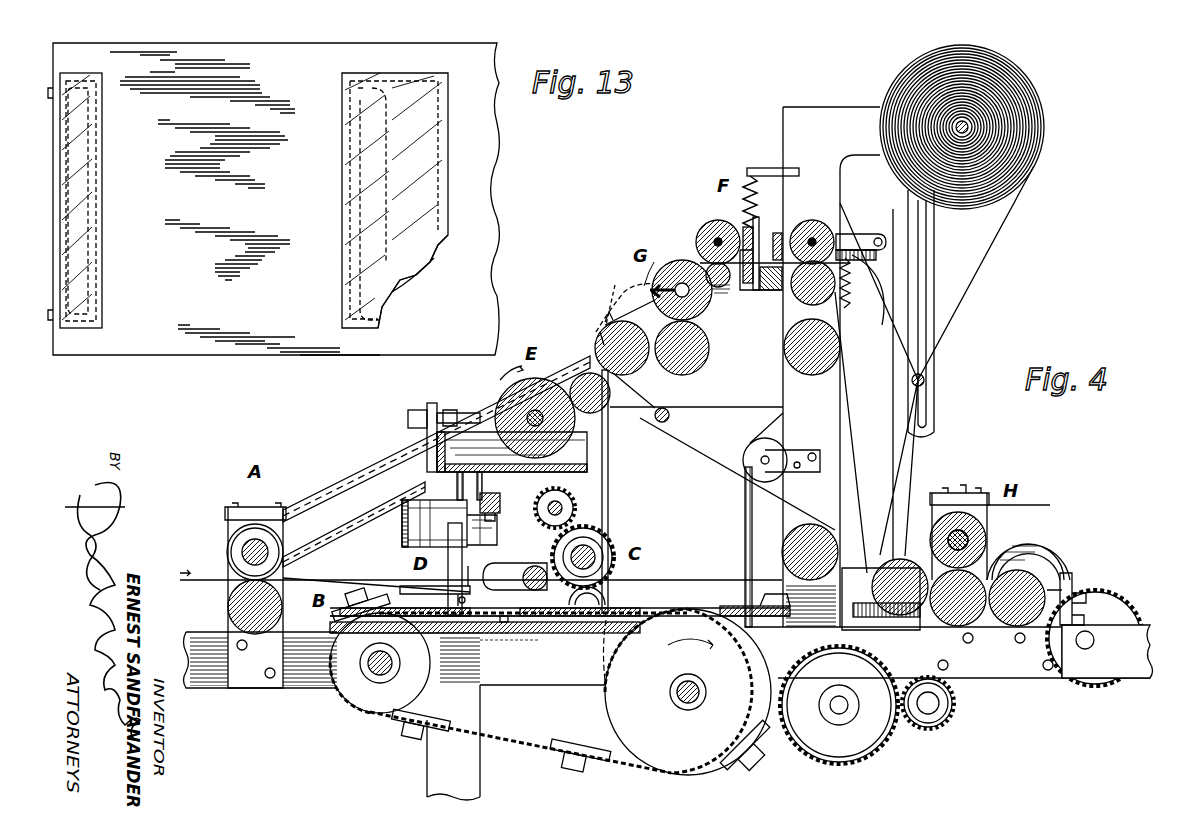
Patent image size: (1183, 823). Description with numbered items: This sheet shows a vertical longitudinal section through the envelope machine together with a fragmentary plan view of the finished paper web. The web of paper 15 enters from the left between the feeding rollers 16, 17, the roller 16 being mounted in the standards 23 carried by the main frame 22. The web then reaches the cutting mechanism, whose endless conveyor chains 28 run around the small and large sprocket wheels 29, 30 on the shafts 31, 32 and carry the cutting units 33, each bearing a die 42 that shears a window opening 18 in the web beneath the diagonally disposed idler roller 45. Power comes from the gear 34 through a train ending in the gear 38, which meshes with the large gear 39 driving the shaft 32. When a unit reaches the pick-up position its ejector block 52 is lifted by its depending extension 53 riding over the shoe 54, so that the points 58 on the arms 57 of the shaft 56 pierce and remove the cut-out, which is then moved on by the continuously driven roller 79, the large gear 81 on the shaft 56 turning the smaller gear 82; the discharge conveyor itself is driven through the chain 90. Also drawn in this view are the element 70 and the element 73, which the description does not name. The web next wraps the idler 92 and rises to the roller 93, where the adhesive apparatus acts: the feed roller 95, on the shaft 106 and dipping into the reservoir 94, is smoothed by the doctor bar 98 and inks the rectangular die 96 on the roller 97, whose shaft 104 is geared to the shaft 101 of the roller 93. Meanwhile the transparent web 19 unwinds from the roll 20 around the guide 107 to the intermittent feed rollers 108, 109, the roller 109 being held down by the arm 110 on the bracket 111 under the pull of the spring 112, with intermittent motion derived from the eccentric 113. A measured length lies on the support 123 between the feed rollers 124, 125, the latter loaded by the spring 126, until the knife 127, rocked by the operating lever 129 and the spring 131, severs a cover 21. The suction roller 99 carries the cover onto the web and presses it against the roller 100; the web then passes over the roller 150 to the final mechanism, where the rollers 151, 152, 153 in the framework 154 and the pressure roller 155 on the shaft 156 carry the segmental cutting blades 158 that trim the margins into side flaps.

In FIG. 13, the web of paper 15 is at (273, 199).
In FIG. 4, the web of paper 15 is at (473, 586).
In FIG. 4, the feeding roller 16 is at (228, 620).
In FIG. 4, the feeding roller 17 is at (230, 557).
In FIG. 13, the window opening 18 is at (392, 305).
In FIG. 4, the web of transparent paper 19 is at (983, 275).
In FIG. 4, the roll 20 is at (1044, 80).
In FIG. 13, the cover 21 is at (410, 290).
In FIG. 4, the main frame 22 is at (308, 686).
In FIG. 4, the standards 23 is at (310, 570).
In FIG. 4, the endless conveyor chains 28 is at (515, 760).
In FIG. 4, the small sprocket wheel 29 is at (350, 715).
In FIG. 4, the large sprocket wheel 30 is at (686, 760).
In FIG. 4, the shaft 31 is at (385, 675).
In FIG. 4, the shaft 32 is at (673, 690).
In FIG. 4, the cutting units 33 is at (360, 598).
In FIG. 4, the gear 34 is at (1100, 598).
In FIG. 4, the gear 38 is at (952, 718).
In FIG. 4, the large gear 39 is at (870, 745).
In FIG. 4, the die 42 is at (490, 636).
In FIG. 4, the idler roller 45 is at (440, 598).
In FIG. 4, the ejector block 52 is at (504, 625).
In FIG. 4, the depending extension 53 is at (540, 618).
In FIG. 4, the shoe 54 is at (575, 633).
In FIG. 4, the shaft 56 is at (590, 550).
In FIG. 4, the arms 57 is at (565, 572).
In FIG. 4, the point 58 is at (605, 600).
In FIG. 4, the lever 70 is at (756, 440).
In FIG. 4, the brace 73 is at (380, 455).
In FIG. 4, the continuously driven roller 79 is at (500, 500).
In FIG. 4, the large gear 81 is at (596, 552).
In FIG. 4, the smaller gear 82 is at (575, 505).
In FIG. 4, the chain 90 is at (398, 530).
In FIG. 4, the idler 92 is at (782, 542).
In FIG. 4, the roller 93 is at (650, 362).
In FIG. 4, the reservoir 94 is at (432, 403).
In FIG. 4, the feed roller 95 is at (512, 368).
In FIG. 4, the die 96 is at (575, 373).
In FIG. 4, the roller 97 is at (608, 440).
In FIG. 4, the doctor bar 98 is at (500, 400).
In FIG. 4, the roller 99 is at (700, 322).
In FIG. 4, the roller 100 is at (709, 355).
In FIG. 4, the shaft 101 is at (625, 298).
In FIG. 4, the shaft 104 is at (655, 420).
In FIG. 4, the shaft 106 is at (590, 466).
In FIG. 4, the guide 107 is at (925, 383).
In FIG. 4, the feed roller 108 is at (838, 312).
In FIG. 4, the feed roller 109 is at (810, 220).
In FIG. 4, the arm 110 is at (848, 237).
In FIG. 4, the bracket 111 is at (870, 245).
In FIG. 4, the spring 112 is at (852, 292).
In FIG. 4, the eccentric 113 is at (1050, 598).
In FIG. 4, the support 123 is at (768, 292).
In FIG. 4, the feed roller 124 is at (722, 288).
In FIG. 4, the feed roller 125 is at (704, 223).
In FIG. 4, the spring 126 is at (660, 260).
In FIG. 4, the knife 127 is at (768, 202).
In FIG. 4, the operating lever 129 is at (742, 210).
In FIG. 4, the spring 131 is at (752, 178).
In FIG. 4, the roller 150 is at (806, 375).
In FIG. 4, the roller 151 is at (890, 615).
In FIG. 4, the roller 152 is at (960, 628).
In FIG. 4, the roller 153 is at (1014, 626).
In FIG. 4, the framework 154 is at (1060, 525).
In FIG. 4, the pressure roller 155 is at (960, 512).
In FIG. 4, the shaft 156 is at (990, 520).
In FIG. 4, the segmental cutting blades 158 is at (930, 540).